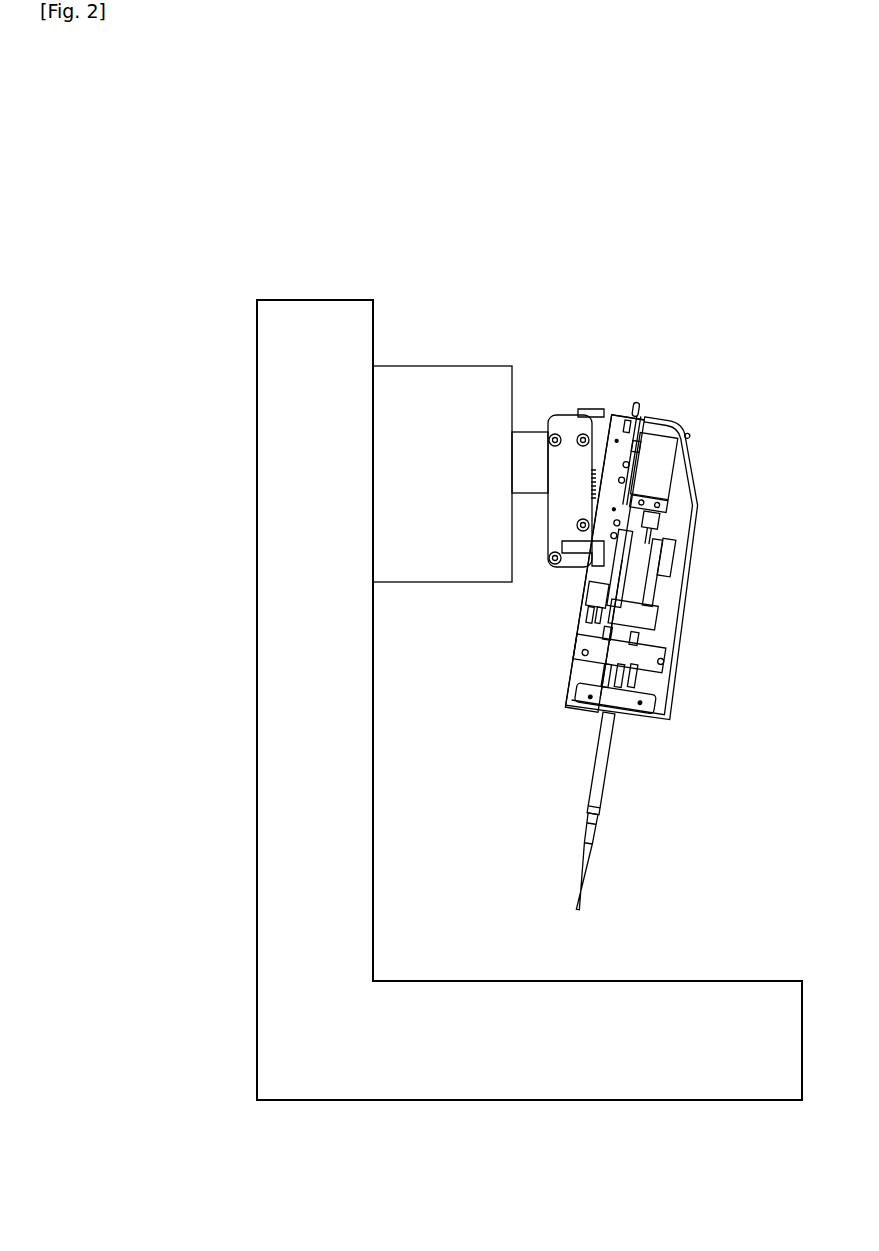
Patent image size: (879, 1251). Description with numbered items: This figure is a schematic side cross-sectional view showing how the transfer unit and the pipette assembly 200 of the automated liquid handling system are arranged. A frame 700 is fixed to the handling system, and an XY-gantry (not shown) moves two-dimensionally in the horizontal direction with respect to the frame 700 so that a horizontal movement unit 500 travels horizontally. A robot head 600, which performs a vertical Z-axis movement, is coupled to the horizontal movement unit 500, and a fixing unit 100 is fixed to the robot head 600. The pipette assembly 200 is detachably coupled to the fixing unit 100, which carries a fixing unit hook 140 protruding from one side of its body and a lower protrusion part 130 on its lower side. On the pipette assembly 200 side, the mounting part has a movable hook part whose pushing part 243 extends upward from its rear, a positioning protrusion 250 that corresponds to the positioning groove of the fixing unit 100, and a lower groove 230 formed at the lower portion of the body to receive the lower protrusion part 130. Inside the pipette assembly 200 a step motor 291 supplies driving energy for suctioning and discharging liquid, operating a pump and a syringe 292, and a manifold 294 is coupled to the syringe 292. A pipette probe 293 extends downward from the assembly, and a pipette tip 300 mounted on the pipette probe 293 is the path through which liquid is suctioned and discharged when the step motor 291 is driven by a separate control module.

The frame 700 is at (284, 751).
The horizontal movement unit 500 is at (412, 553).
The robot head 600 is at (530, 455).
The fixing unit 100 is at (556, 409).
The fixing unit hook 140 is at (594, 403).
The lower protrusion part 130 is at (570, 557).
The pipette assembly 200 is at (703, 467).
The positioning protrusion 250 is at (608, 447).
The pushing part 243 is at (638, 401).
The step motor 291 is at (657, 440).
The lower groove 230 is at (578, 578).
The syringe 292 is at (672, 688).
The manifold 294 is at (662, 712).
The pipette probe 293 is at (620, 768).
The pipette tip 300 is at (620, 858).